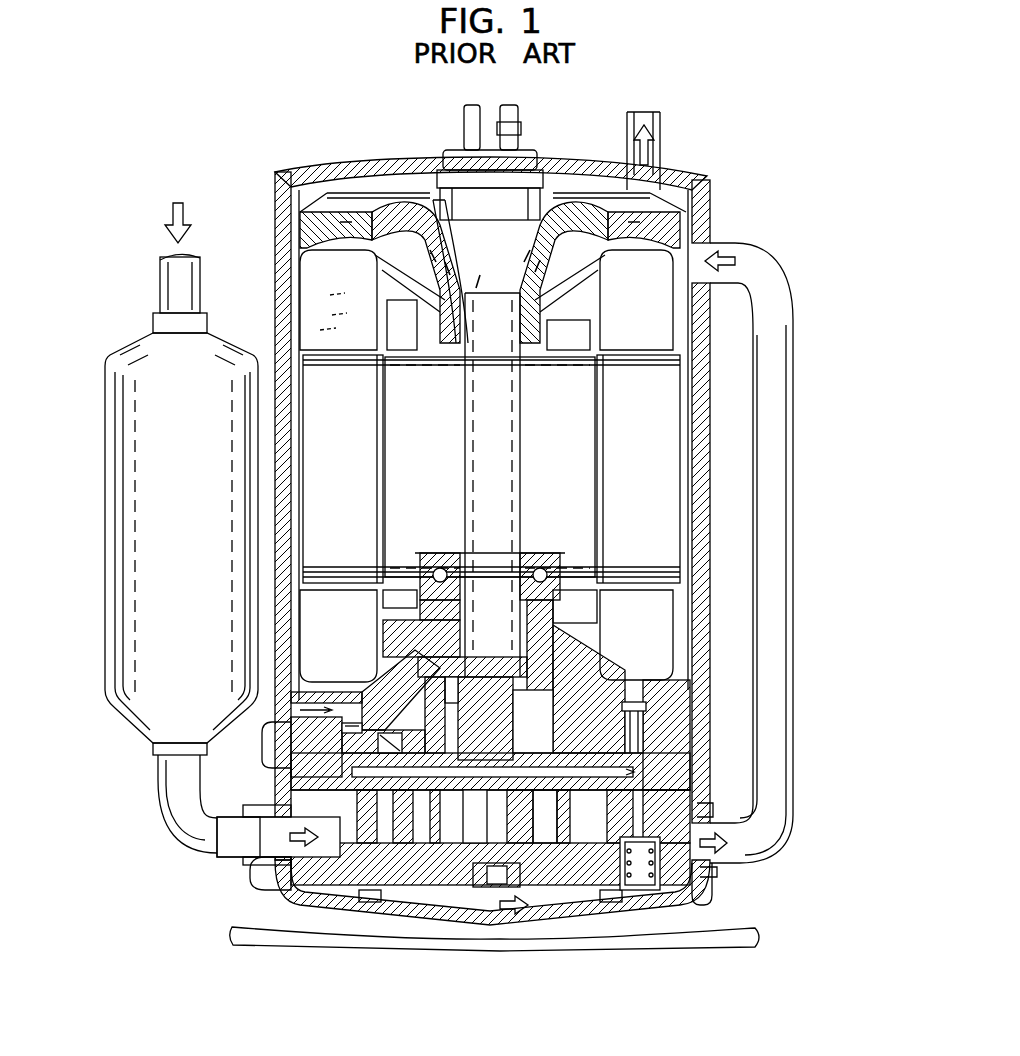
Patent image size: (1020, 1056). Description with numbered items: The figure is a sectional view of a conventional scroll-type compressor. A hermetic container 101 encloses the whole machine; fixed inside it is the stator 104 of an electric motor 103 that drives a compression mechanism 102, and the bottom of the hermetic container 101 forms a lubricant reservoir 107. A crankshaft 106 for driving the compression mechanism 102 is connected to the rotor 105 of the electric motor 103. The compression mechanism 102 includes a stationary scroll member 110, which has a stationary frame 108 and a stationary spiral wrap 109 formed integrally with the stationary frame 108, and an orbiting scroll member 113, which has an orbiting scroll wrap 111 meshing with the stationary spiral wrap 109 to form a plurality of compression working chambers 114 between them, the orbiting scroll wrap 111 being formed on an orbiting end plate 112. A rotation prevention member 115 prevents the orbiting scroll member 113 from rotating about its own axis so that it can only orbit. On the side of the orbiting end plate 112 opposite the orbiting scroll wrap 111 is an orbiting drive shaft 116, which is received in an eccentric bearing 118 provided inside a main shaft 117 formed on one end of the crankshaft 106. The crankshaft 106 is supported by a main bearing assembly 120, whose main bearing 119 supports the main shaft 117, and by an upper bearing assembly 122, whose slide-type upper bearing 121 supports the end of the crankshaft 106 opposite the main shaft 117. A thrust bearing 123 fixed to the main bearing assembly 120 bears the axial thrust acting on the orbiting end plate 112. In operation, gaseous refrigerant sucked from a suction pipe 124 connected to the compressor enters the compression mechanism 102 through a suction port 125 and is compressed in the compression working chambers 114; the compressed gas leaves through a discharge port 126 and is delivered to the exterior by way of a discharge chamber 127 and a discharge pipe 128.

The hermetic container 101 is at (711, 198).
The compression mechanism 102 is at (660, 800).
The electric motor 103 is at (307, 247).
The stator 104 is at (565, 388).
The rotor 105 is at (683, 352).
The crankshaft 106 is at (662, 398).
The lubricant reservoir 107 is at (385, 750).
The stationary frame 108 is at (716, 873).
The stationary spiral wrap 109 is at (545, 870).
The stationary scroll member 110 is at (615, 882).
The orbiting scroll wrap 111 is at (505, 870).
The orbiting end plate 112 is at (370, 865).
The orbiting scroll member 113 is at (335, 790).
The compression working chambers 114 is at (425, 870).
The rotation prevention member 115 is at (245, 855).
The orbiting drive shaft 116 is at (400, 690).
The main shaft 117 is at (590, 710).
The eccentric bearing 118 is at (600, 660).
The main bearing 119 is at (560, 615).
The main bearing assembly 120 is at (502, 463).
The slide-type upper bearing 121 is at (420, 290).
The upper bearing assembly 122 is at (280, 166).
The thrust bearing 123 is at (645, 722).
The suction pipe 124 is at (195, 850).
The suction port 125 is at (285, 892).
The discharge port 126 is at (485, 890).
The discharge chamber 127 is at (507, 237).
The discharge pipe 128 is at (662, 128).